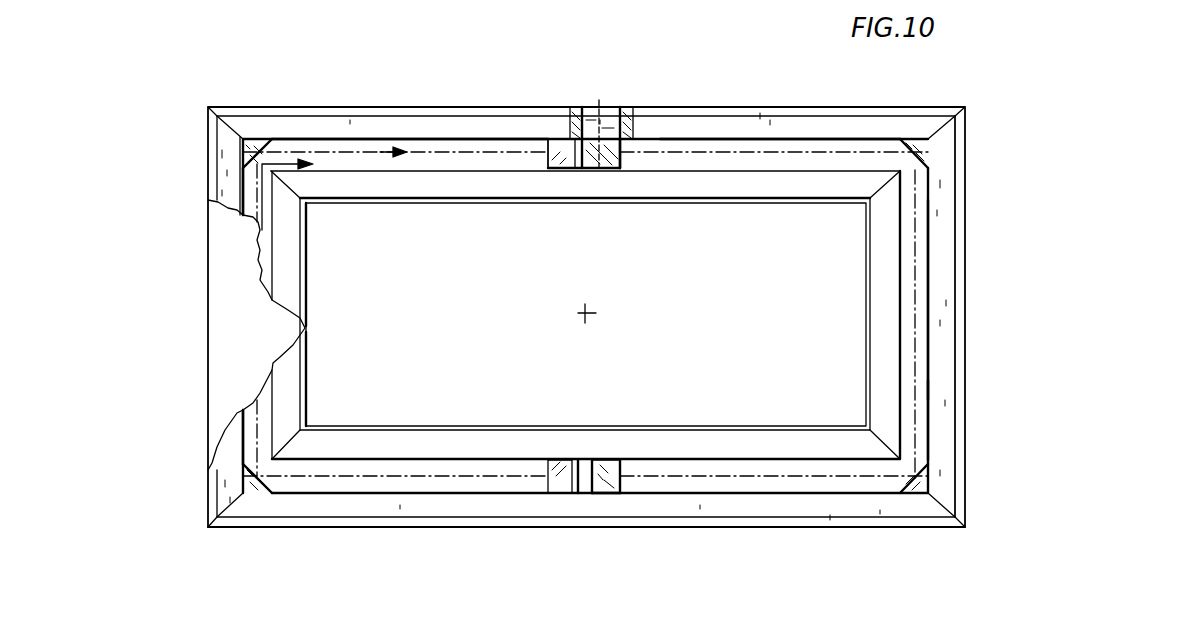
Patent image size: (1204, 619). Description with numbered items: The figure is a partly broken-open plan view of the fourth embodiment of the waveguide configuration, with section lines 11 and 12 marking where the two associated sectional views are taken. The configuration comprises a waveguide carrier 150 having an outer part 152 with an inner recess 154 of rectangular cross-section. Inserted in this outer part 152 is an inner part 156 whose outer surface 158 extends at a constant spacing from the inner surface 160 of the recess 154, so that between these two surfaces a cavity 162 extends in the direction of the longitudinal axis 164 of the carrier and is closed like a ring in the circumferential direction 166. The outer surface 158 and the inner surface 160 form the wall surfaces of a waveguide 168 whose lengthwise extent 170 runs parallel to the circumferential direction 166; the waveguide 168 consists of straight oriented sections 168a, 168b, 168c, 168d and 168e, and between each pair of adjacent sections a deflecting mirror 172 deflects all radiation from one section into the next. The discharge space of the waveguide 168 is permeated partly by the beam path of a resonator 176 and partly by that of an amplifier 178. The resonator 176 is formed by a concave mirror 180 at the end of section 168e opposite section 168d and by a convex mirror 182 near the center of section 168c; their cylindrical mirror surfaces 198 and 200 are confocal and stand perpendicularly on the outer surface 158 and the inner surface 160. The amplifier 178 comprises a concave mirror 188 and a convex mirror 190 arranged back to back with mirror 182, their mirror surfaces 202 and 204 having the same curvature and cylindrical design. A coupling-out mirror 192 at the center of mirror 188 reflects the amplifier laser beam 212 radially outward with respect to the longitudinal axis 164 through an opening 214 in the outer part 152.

The section line 11— 11 is at (596, 162).
The section line 12— 12 is at (610, 465).
The waveguide carrier 150 is at (733, 97).
The outer part 152 is at (945, 297).
The inner recess 154 is at (920, 332).
The inner part 156 is at (883, 285).
The outer surface 158 is at (905, 368).
The inner surface 160 is at (928, 392).
The cavity 162 is at (917, 250).
The longitudinal axis 164 is at (590, 309).
The circumferential direction 166 is at (283, 167).
The waveguide 168 is at (445, 135).
The straight oriented waveguide section 168a is at (797, 155).
The straight oriented waveguide section 168b is at (917, 420).
The straight oriented waveguide section 168c is at (443, 476).
The straight oriented waveguide section 168d is at (243, 200).
The straight oriented waveguide section 168e is at (487, 150).
The lengthwise extent 170 is at (380, 152).
The deflecting mirror 172 is at (258, 142).
The resonator 176 is at (368, 535).
The amplifier 178 is at (707, 535).
The mirror 180 is at (563, 160).
The mirror 182 is at (560, 493).
The mirror 188 is at (622, 150).
The mirror 190 is at (606, 493).
The coupling-out mirror 192 is at (600, 158).
The mirror surface 198 is at (547, 152).
The mirror surface 200 is at (550, 468).
The mirror surface 202 is at (622, 158).
The mirror surface 204 is at (625, 465).
The amplifier laser beam 212 is at (597, 100).
The opening 214 is at (603, 102).